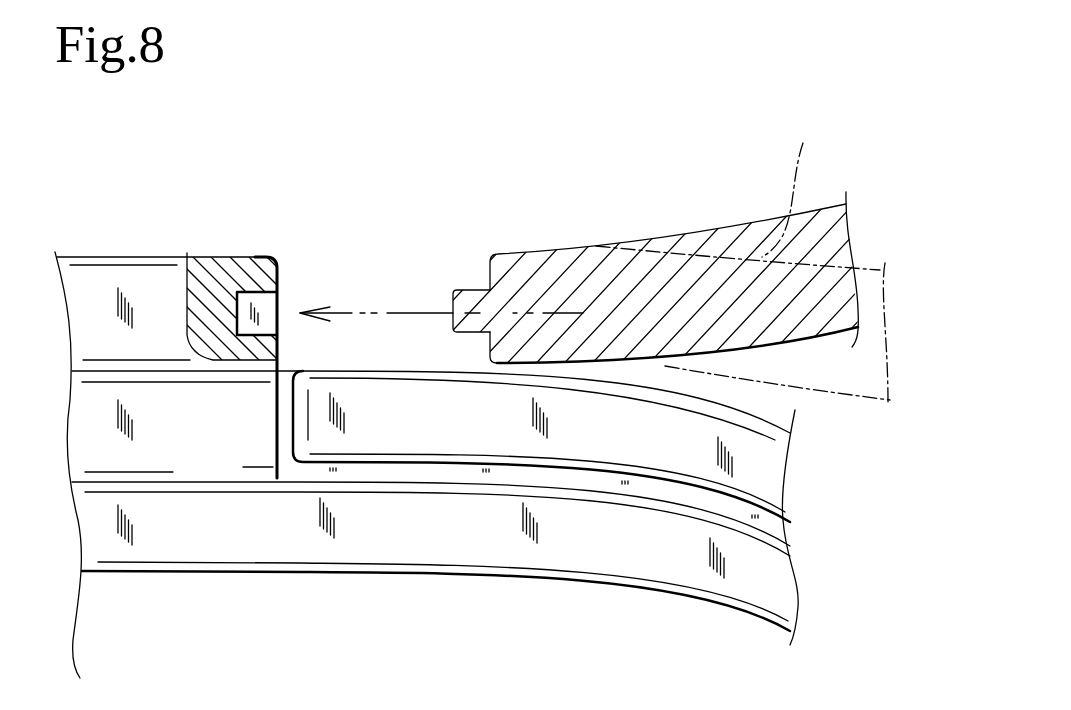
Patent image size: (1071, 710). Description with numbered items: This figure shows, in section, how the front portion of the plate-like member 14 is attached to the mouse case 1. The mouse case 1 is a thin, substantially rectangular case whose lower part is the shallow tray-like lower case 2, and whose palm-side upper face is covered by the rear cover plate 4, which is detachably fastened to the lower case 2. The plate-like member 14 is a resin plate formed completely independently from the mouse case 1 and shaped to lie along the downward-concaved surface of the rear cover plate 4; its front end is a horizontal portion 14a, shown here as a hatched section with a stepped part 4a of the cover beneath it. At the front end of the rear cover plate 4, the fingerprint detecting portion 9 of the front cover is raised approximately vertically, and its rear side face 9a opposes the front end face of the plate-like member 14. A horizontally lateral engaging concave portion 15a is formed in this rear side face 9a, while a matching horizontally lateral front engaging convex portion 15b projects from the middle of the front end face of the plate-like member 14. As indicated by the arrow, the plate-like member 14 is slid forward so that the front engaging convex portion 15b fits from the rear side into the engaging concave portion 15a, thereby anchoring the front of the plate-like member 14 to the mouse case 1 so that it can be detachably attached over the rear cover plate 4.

The mouse case 1 is at (66, 537).
The lower case 2 is at (753, 569).
The rear cover plate 4 is at (753, 470).
The stepped portion of outer ring member 4a is at (367, 428).
The fingerprint detecting portion 9 is at (144, 245).
The rear side face 9a is at (278, 283).
The plate-like member 14 is at (818, 208).
The front horizontal portion 14a is at (553, 250).
The engaging concave portion 15a is at (242, 315).
The front engaging convex portion 15b is at (463, 288).